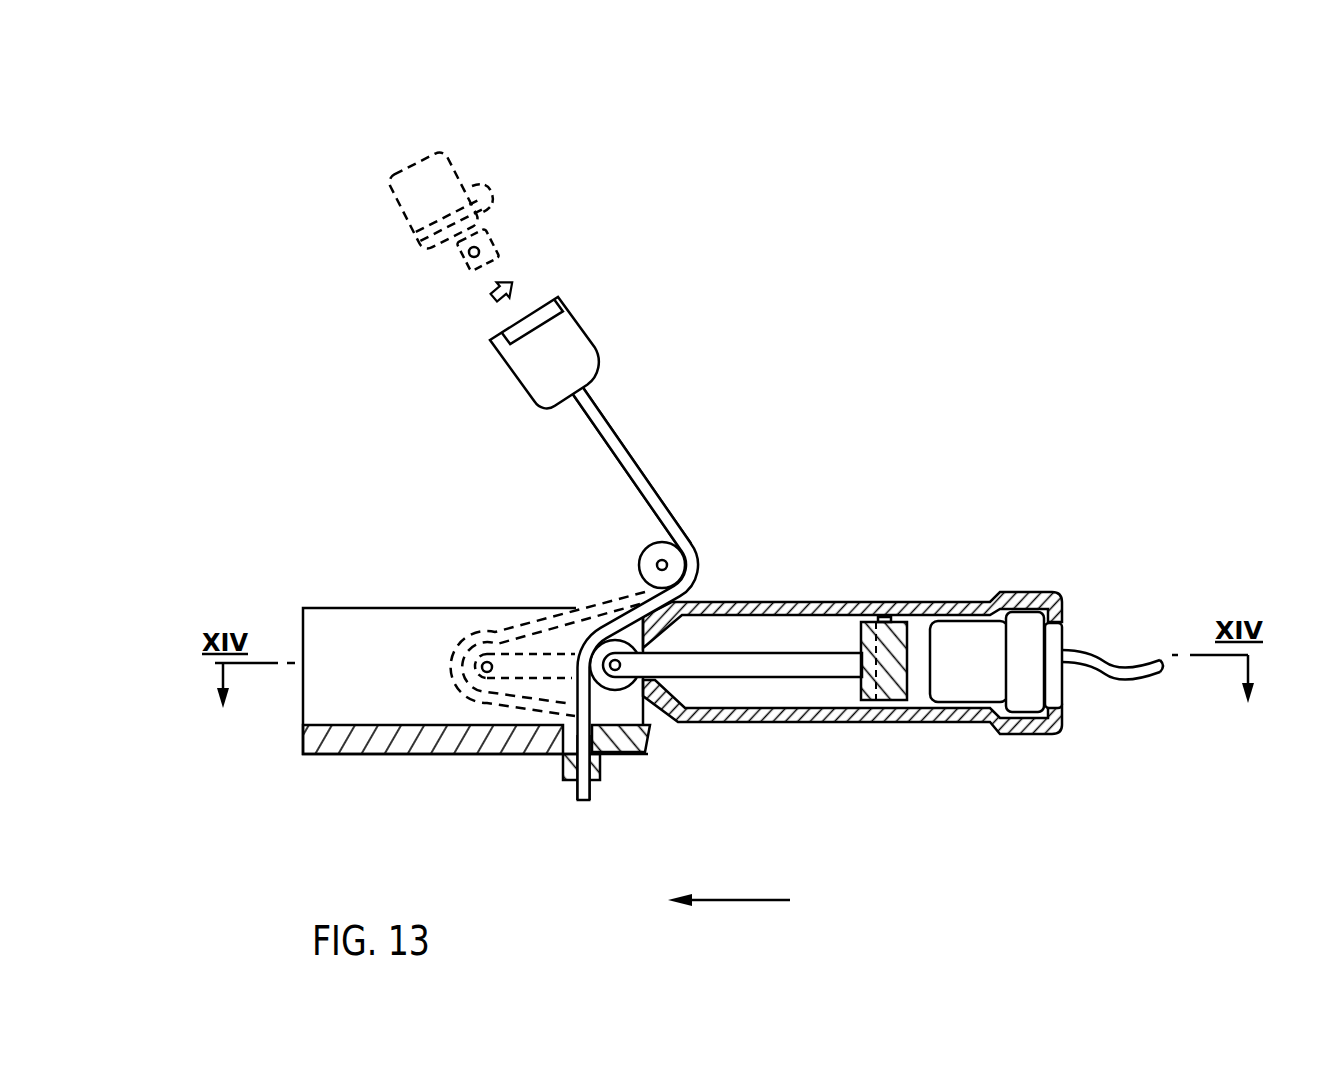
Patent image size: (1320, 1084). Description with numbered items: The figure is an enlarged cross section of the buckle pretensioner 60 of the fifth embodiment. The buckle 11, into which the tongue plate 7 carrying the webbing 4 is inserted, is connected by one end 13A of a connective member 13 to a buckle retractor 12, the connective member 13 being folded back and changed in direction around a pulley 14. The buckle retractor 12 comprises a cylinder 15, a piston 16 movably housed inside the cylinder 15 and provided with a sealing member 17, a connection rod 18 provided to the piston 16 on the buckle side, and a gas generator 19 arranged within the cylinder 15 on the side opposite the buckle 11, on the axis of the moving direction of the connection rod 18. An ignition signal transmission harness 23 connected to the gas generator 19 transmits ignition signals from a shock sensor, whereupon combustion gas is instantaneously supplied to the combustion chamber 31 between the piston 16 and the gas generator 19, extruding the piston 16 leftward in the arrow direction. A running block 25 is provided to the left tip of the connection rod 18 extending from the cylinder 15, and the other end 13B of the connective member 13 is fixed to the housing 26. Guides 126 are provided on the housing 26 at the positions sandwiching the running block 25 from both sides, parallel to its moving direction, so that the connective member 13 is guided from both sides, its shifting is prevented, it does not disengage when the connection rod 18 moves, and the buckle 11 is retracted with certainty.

The webbing 4 is at (455, 165).
The tongue plate 7 is at (497, 207).
The buckle 11 is at (577, 348).
The buckle retractor 12 is at (1040, 465).
The connective member 13 is at (643, 478).
The one end of connective member 13A is at (598, 418).
The other end of connective member 13B is at (580, 797).
The pulley 14 is at (652, 565).
The cylinder 15 is at (959, 710).
The piston 16 is at (893, 690).
The sealing member 17 is at (886, 625).
The connection rod 18 is at (748, 665).
The gas generator 19 is at (1032, 630).
The ignition signal transmission harness 23 is at (1113, 667).
The running block 25 is at (480, 648).
The housing 26 is at (543, 737).
The combustion chamber 31 is at (917, 642).
The buckle pretensioner 60 is at (908, 396).
The guides 126 is at (357, 627).